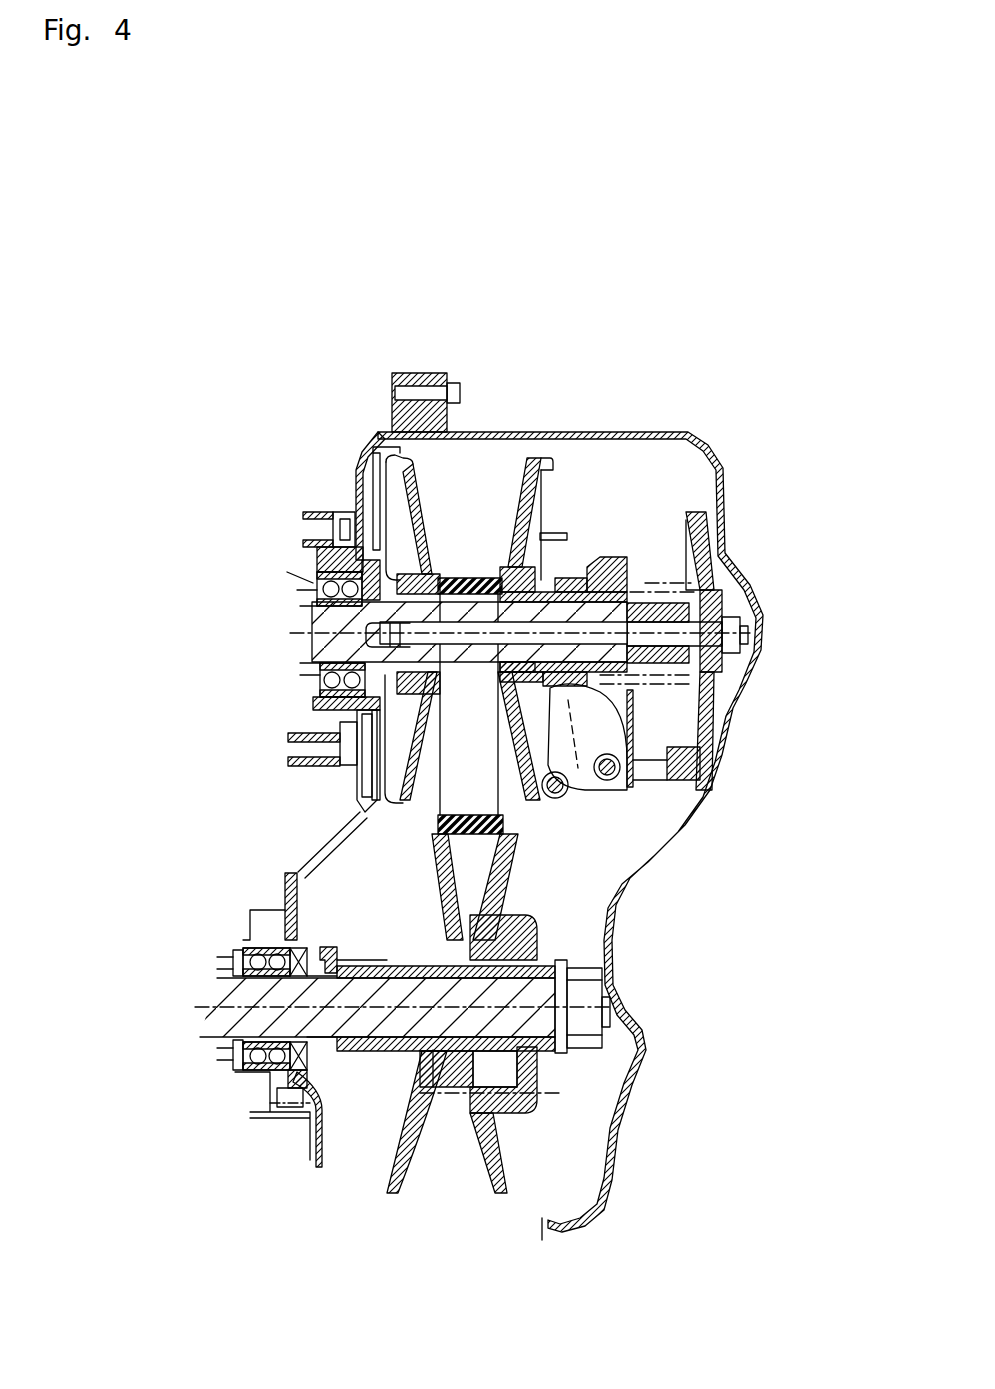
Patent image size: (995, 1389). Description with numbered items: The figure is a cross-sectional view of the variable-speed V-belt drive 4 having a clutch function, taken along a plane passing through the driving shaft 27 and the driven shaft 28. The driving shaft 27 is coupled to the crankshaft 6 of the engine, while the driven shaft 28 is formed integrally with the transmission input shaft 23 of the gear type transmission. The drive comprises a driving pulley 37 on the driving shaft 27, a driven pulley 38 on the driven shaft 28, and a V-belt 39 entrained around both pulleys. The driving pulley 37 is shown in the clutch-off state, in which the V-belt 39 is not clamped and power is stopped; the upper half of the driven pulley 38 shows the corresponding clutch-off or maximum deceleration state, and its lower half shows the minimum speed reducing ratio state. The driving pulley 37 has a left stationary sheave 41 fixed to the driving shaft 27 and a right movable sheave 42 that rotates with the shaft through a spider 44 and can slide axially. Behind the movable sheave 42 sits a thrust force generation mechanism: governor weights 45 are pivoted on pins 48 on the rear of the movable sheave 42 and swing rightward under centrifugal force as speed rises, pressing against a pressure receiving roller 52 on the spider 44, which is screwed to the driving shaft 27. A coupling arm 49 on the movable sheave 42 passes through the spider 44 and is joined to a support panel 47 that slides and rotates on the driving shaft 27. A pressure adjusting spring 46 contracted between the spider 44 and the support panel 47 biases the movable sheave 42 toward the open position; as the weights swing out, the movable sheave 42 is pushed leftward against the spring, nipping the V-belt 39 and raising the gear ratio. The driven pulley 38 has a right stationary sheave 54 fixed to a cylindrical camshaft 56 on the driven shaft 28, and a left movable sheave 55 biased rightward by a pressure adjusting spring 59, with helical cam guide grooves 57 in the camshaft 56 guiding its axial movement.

The variable-speed V-belt drive 4 is at (210, 516).
The crankshaft 6 is at (300, 636).
The transmission input shaft 23 is at (218, 1010).
The driving shaft 27 is at (485, 578).
The driven shaft 28 is at (378, 993).
The driving pulley 37 is at (521, 450).
The driven pulley 38 is at (476, 1200).
The V-belt 39 is at (441, 578).
The stationary sheave 41 is at (398, 485).
The movable sheave 42 is at (537, 492).
The spider 44 is at (618, 788).
The governor weights 45 is at (587, 725).
The pressure adjusting spring 46 is at (647, 580).
The support panel 47 is at (712, 522).
The pins 48 is at (562, 810).
The coupling arm 49 is at (650, 775).
The pressure receiving roller 52 is at (597, 790).
The stationary sheave 54 is at (507, 1185).
The movable sheave 55 is at (387, 1183).
The cylindrical camshaft 56 is at (527, 1115).
The helical cam guide grooves 57 is at (433, 1087).
The pressure adjusting spring 59 is at (335, 947).